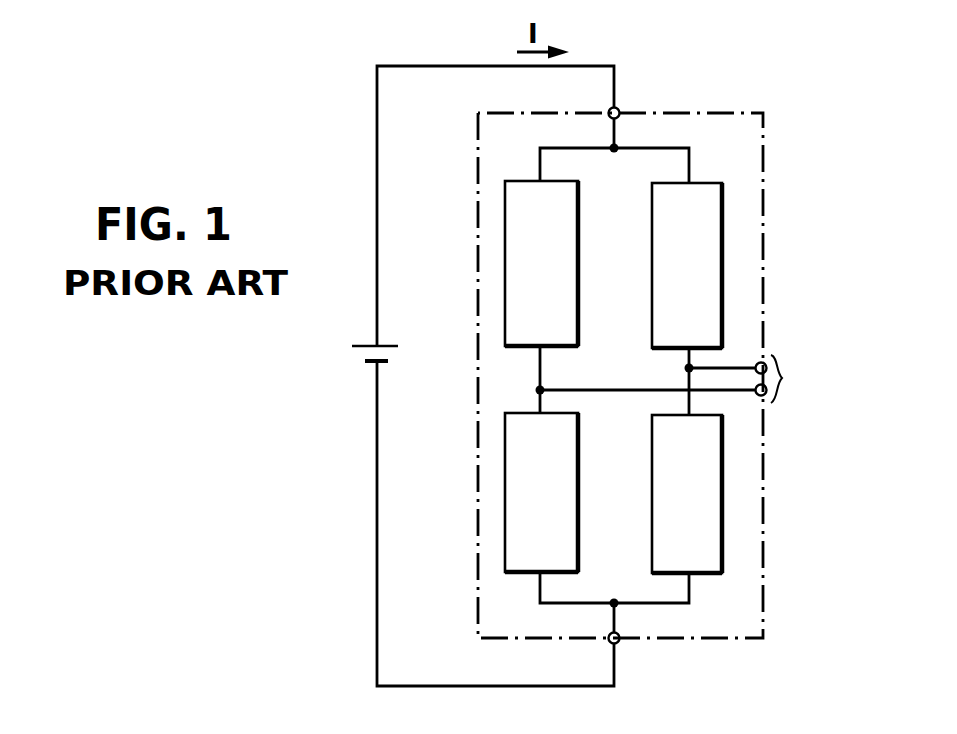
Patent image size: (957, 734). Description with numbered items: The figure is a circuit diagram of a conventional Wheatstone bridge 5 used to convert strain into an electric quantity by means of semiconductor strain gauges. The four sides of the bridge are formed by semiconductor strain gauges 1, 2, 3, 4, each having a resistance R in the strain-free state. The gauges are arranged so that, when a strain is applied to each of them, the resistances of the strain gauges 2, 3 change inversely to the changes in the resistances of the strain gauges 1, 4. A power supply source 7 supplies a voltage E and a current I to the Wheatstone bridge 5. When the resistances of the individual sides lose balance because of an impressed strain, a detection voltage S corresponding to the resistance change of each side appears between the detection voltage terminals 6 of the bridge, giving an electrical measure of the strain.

The semiconductor strain gauge 1 is at (578, 204).
The semiconductor strain gauge 2 is at (578, 442).
The semiconductor strain gauge 3 is at (711, 181).
The semiconductor strain gauge 4 is at (721, 558).
The Wheatstone bridge 5 is at (685, 112).
The detection voltage terminals 6 is at (783, 378).
The power supply source 7 is at (356, 357).